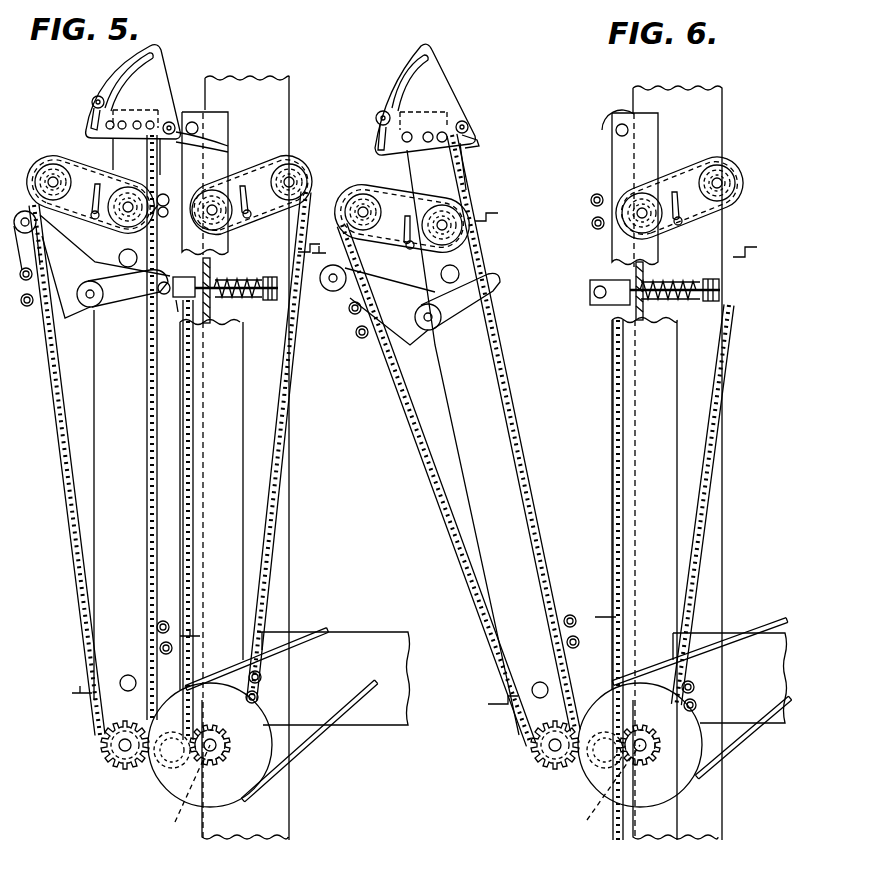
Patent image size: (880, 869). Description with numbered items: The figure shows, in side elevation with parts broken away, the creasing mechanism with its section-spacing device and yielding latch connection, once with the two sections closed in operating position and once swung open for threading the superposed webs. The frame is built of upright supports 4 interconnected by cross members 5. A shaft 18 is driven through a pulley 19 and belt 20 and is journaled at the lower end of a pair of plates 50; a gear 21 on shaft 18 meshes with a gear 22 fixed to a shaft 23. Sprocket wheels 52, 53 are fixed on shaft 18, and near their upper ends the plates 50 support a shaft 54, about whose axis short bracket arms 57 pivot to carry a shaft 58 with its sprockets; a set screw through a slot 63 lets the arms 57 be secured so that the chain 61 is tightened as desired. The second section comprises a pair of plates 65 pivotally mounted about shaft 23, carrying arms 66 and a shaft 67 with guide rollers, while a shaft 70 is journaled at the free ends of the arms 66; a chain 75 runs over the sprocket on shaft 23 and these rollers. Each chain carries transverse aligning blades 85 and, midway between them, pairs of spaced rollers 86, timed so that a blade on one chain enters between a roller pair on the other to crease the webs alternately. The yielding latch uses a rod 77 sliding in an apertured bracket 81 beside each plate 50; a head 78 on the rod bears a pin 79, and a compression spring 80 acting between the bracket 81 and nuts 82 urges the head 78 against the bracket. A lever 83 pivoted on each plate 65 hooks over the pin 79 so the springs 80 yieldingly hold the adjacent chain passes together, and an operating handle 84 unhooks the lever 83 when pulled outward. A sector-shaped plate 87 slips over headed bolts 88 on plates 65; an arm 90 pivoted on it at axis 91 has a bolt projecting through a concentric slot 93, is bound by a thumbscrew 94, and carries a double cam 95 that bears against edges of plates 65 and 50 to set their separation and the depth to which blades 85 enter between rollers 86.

In FIG. 5, the upright supports 4 is at (277, 816).
In FIG. 6, the upright supports 4 is at (705, 803).
In FIG. 5, the cross members 5 is at (372, 633).
In FIG. 6, the cross members 5 is at (722, 633).
In FIG. 5, the shaft 18 is at (210, 751).
In FIG. 6, the shaft 18 is at (640, 751).
In FIG. 5, the pulley 19 is at (236, 790).
In FIG. 6, the pulley 19 is at (668, 787).
In FIG. 5, the belt 20 is at (350, 634).
In FIG. 6, the belt 20 is at (760, 635).
In FIG. 5, the gear 21 is at (180, 791).
In FIG. 6, the gear 21 is at (604, 788).
In FIG. 5, the gear 22 is at (100, 740).
In FIG. 6, the gear 22 is at (530, 746).
In FIG. 5, the shaft 23 is at (120, 752).
In FIG. 6, the shaft 23 is at (553, 748).
In FIG. 5, the plates 50 is at (211, 476).
In FIG. 6, the plates 50 is at (639, 475).
In FIG. 5, the sprocket wheel 52 is at (196, 762).
In FIG. 6, the sprocket wheel 52 is at (625, 762).
In FIG. 5, the sprocket wheel 53 is at (160, 766).
In FIG. 6, the sprocket wheel 53 is at (592, 762).
In FIG. 5, the shaft 54 is at (217, 226).
In FIG. 6, the shaft 54 is at (646, 226).
In FIG. 5, the bracket arms 57 is at (262, 215).
In FIG. 6, the bracket arms 57 is at (692, 218).
In FIG. 5, the shaft 58 is at (292, 176).
In FIG. 6, the shaft 58 is at (731, 182).
In FIG. 5, the chain 61 is at (296, 306).
In FIG. 6, the chain 61 is at (728, 322).
In FIG. 5, the slot 63 is at (96, 182).
In FIG. 6, the slot 63 is at (676, 188).
In FIG. 5, the plates 65 is at (127, 427).
In FIG. 6, the plates 65 is at (493, 434).
In FIG. 5, the arms 66 is at (86, 172).
In FIG. 6, the arms 66 is at (392, 198).
In FIG. 5, the shaft 67 is at (128, 188).
In FIG. 6, the shaft 67 is at (442, 206).
In FIG. 5, the shaft 70 is at (53, 164).
In FIG. 6, the shaft 70 is at (361, 196).
In FIG. 5, the chain 75 is at (62, 460).
In FIG. 6, the chain 75 is at (416, 432).
In FIG. 5, the rod 77 is at (256, 300).
In FIG. 6, the rod 77 is at (692, 300).
In FIG. 5, the head 78 is at (176, 302).
In FIG. 6, the head 78 is at (600, 305).
In FIG. 5, the pin 79 is at (168, 298).
In FIG. 6, the pin 79 is at (594, 291).
In FIG. 5, the compression spring 80 is at (232, 294).
In FIG. 6, the compression spring 80 is at (668, 300).
In FIG. 5, the apertured bracket 81 is at (212, 276).
In FIG. 6, the apertured bracket 81 is at (634, 272).
In FIG. 5, the nuts 82 is at (276, 274).
In FIG. 6, the nuts 82 is at (722, 292).
In FIG. 5, the lever 83 is at (112, 298).
In FIG. 6, the lever 83 is at (503, 284).
In FIG. 5, the operating handle 84 is at (96, 263).
In FIG. 6, the operating handle 84 is at (396, 292).
In FIG. 5, the aligning blades 85 is at (80, 690).
In FIG. 6, the aligning blades 85 is at (496, 212).
In FIG. 5, the rollers 86 is at (28, 306).
In FIG. 6, the rollers 86 is at (358, 336).
In FIG. 5, the sector-shaped plate 87 is at (166, 78).
In FIG. 6, the sector-shaped plate 87 is at (438, 80).
In FIG. 5, the headed bolts 88 is at (168, 196).
In FIG. 5, the arm 90 is at (140, 112).
In FIG. 6, the arm 90 is at (413, 111).
In FIG. 5, the axis 91 is at (170, 121).
In FIG. 6, the axis 91 is at (467, 120).
In FIG. 5, the slot 93 is at (124, 78).
In FIG. 6, the slot 93 is at (397, 78).
In FIG. 5, the thumbscrew 94 is at (92, 100).
In FIG. 6, the thumbscrew 94 is at (378, 113).
In FIG. 5, the double cam 95 is at (229, 149).
In FIG. 6, the double cam 95 is at (479, 141).